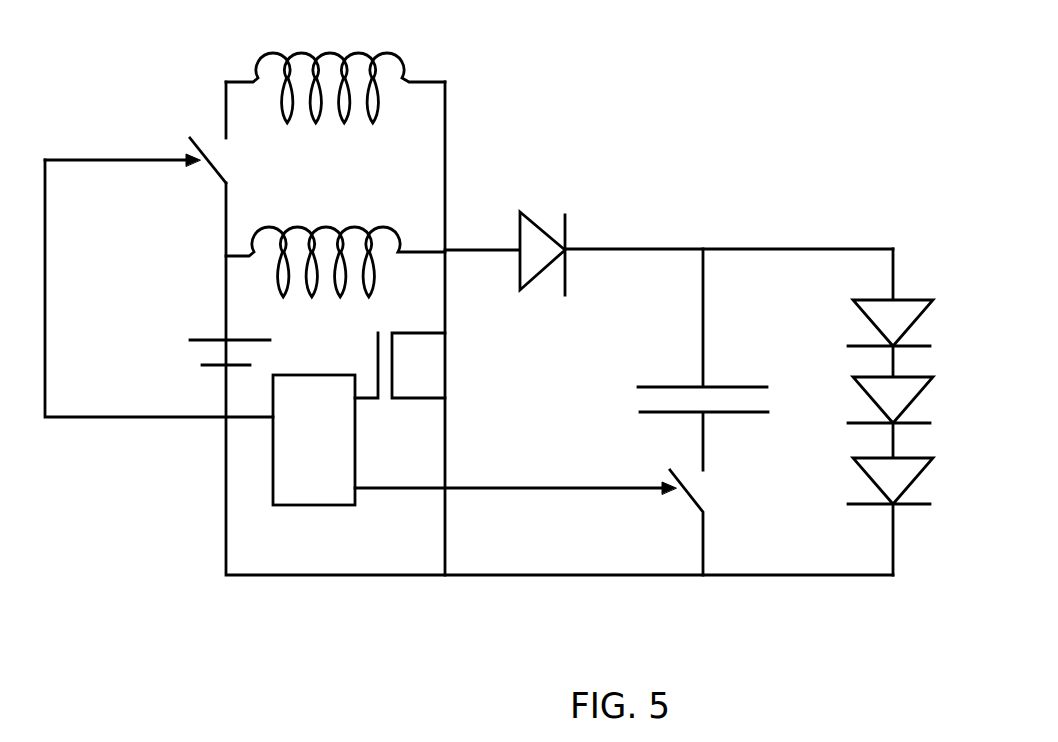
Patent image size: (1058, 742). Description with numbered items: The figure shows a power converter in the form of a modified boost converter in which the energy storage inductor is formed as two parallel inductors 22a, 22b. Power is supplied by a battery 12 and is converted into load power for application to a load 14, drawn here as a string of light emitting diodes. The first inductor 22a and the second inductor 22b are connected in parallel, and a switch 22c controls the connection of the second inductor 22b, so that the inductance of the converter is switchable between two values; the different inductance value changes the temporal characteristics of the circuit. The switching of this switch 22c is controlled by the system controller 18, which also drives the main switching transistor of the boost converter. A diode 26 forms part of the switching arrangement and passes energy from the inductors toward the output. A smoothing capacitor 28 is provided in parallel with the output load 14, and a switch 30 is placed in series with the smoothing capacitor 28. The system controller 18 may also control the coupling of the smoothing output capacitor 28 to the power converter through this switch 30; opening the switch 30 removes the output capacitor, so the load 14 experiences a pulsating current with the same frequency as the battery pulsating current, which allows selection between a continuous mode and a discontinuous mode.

The battery 12 is at (203, 340).
The load 14 is at (945, 336).
The system controller 18 is at (308, 506).
The first inductor 22a is at (383, 222).
The second inductor 22b is at (265, 57).
The switch 22c is at (202, 145).
The diode 26 is at (537, 236).
The smoothing capacitor 28 is at (722, 387).
The switch 30 is at (700, 496).